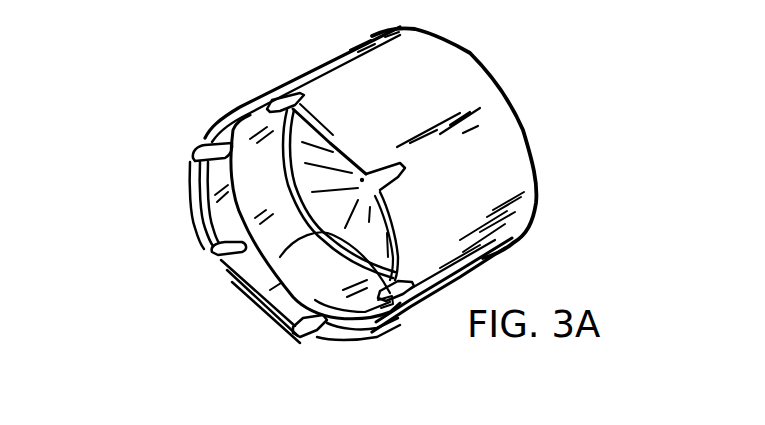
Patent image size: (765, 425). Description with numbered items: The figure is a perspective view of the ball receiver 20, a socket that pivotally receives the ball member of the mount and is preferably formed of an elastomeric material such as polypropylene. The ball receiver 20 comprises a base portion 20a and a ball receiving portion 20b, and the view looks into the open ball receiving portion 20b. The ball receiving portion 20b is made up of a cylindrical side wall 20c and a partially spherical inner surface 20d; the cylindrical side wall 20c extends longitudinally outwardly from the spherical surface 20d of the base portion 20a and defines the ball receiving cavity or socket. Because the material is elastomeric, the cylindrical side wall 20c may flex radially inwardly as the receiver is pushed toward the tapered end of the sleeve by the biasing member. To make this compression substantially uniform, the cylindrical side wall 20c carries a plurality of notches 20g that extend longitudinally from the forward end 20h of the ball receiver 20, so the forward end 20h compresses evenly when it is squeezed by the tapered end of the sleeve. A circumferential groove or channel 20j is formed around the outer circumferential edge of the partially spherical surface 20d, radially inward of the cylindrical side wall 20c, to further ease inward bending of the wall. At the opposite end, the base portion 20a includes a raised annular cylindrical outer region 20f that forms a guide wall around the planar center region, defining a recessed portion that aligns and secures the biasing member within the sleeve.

The ball receiver 20 is at (266, 69).
The base portion 20a is at (430, 83).
The ball receiving portion 20b is at (327, 78).
The cylindrical side wall 20c is at (433, 232).
The partially spherical inner surface 20d is at (312, 245).
The annular cylindrical outer region 20f is at (514, 113).
The notches 20g is at (198, 142).
The forward end 20h is at (196, 224).
The circumferential groove 20j is at (320, 245).